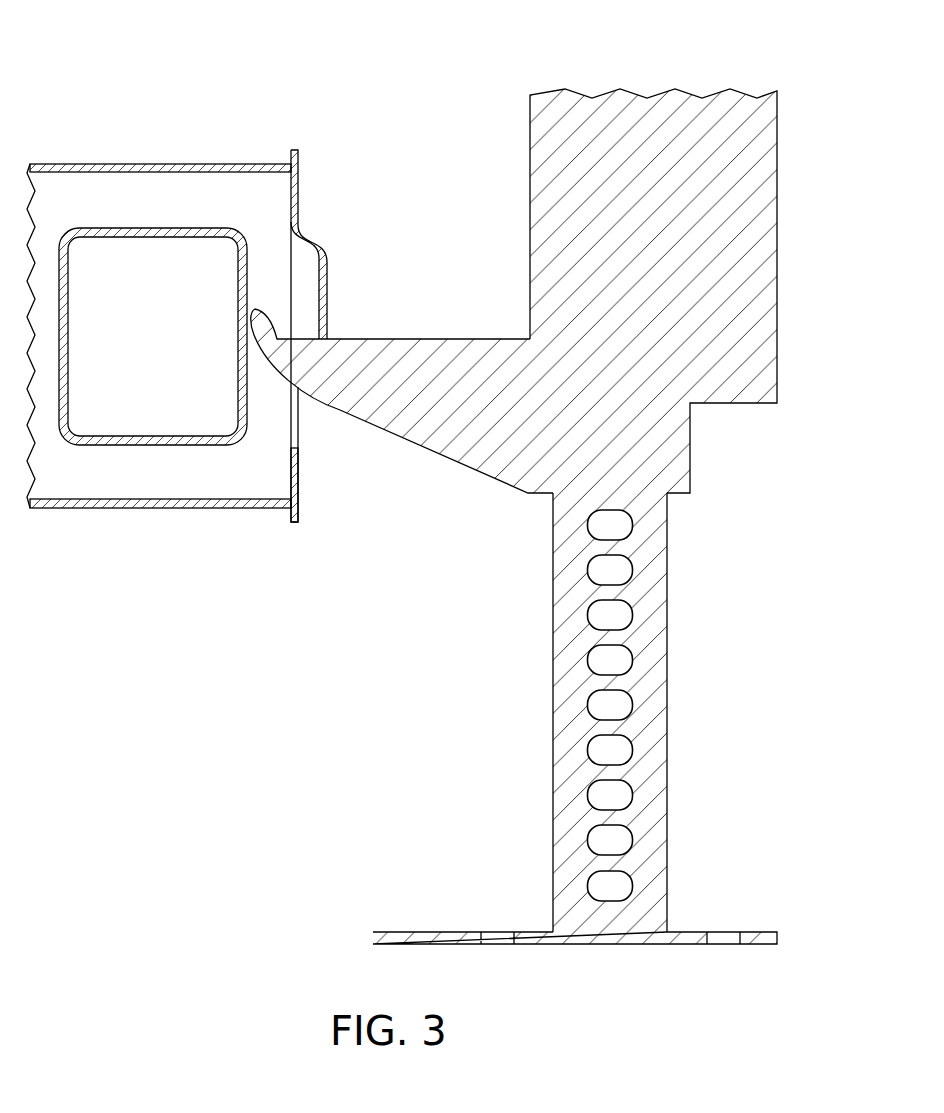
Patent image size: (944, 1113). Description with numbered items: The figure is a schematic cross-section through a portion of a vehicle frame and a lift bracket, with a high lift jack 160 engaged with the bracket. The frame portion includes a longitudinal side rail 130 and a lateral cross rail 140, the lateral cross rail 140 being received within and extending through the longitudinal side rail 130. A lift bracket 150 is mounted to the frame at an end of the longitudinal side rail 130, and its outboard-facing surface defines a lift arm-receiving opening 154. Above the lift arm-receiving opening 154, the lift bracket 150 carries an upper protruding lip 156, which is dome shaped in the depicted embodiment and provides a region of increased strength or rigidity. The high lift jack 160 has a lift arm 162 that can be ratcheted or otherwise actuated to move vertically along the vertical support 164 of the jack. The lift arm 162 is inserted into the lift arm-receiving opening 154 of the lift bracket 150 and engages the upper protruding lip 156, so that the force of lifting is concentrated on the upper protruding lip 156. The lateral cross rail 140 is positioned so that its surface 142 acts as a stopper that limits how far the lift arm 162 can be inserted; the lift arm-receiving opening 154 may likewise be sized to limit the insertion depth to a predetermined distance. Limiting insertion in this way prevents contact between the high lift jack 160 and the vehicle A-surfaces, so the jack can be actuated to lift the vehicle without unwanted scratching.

The longitudinal side rail 130 is at (159, 394).
The lateral cross rail 140 is at (159, 365).
The surface 142 is at (240, 337).
The lift bracket 150 is at (346, 318).
The lift arm-receiving opening 154 is at (322, 383).
The upper protruding lip 156 is at (327, 266).
The high lift jack 160 is at (562, 482).
The lift arm 162 is at (402, 424).
The vertical support 164 is at (577, 718).